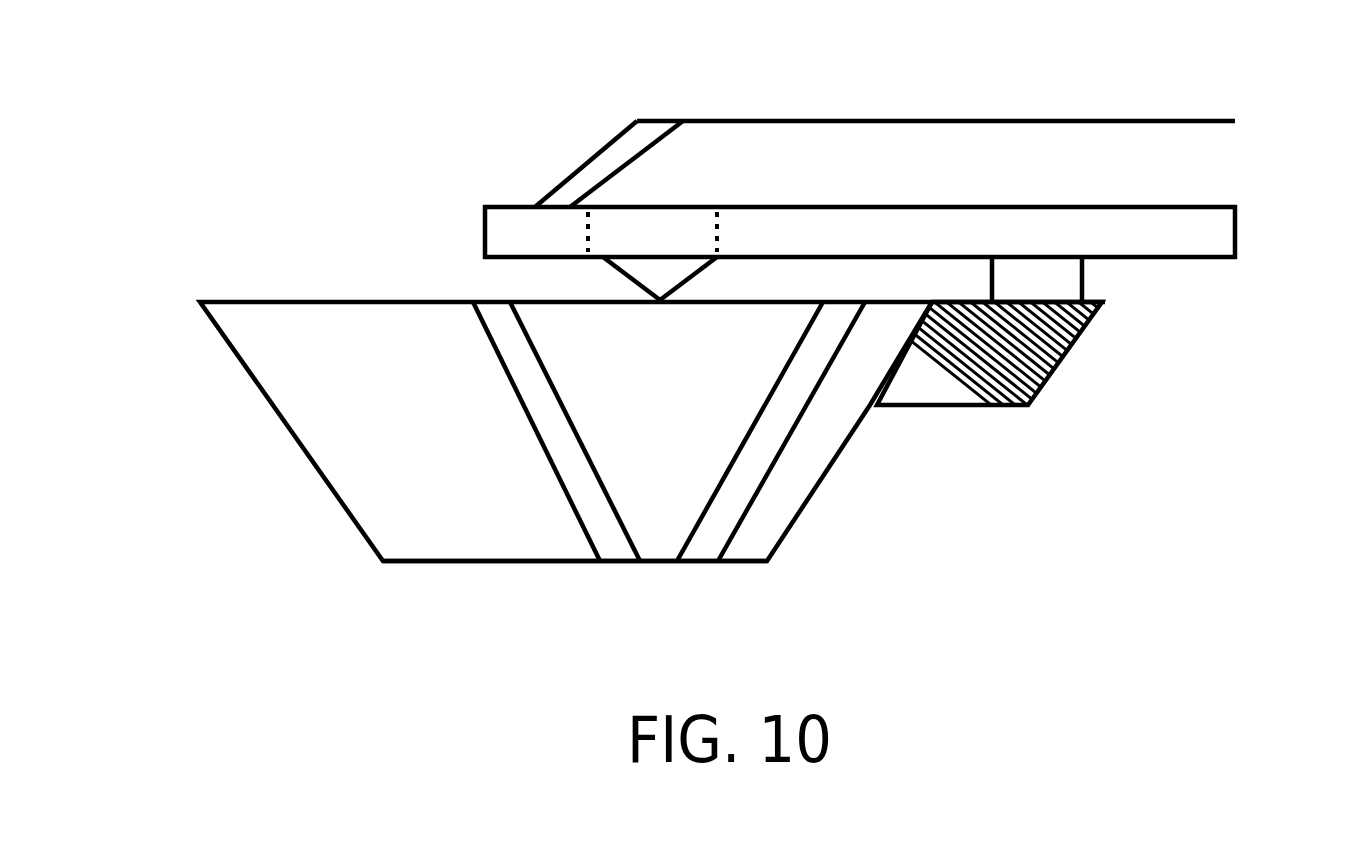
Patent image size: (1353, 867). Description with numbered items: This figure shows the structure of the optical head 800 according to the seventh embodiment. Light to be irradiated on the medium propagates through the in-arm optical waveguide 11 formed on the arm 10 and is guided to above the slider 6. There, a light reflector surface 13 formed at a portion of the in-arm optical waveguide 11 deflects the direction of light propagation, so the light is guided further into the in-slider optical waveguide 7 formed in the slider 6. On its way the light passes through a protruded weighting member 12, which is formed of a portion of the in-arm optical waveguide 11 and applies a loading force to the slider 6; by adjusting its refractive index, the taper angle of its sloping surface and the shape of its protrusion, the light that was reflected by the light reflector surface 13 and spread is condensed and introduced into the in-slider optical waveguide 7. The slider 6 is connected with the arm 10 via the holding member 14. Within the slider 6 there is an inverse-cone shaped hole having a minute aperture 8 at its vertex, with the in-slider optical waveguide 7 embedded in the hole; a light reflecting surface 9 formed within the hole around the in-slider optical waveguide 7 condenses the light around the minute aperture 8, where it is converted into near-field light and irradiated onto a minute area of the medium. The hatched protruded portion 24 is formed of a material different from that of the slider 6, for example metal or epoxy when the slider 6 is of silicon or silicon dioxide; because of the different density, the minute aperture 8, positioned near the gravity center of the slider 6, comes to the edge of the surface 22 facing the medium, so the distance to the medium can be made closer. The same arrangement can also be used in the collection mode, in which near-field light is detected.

The optical head 800 is at (300, 152).
The slider 6 is at (438, 432).
The in-slider optical waveguide 7 is at (665, 442).
The minute aperture 8 is at (660, 563).
The light reflecting surface 9 is at (727, 520).
The arm 10 is at (1155, 227).
The in-arm optical waveguide 11 is at (1093, 138).
The weighting member 12 is at (603, 258).
The light reflector surface 13 is at (585, 163).
The holding member 14 is at (1065, 282).
The surface facing the medium 22 is at (452, 563).
The protruded portion 24 is at (1013, 373).